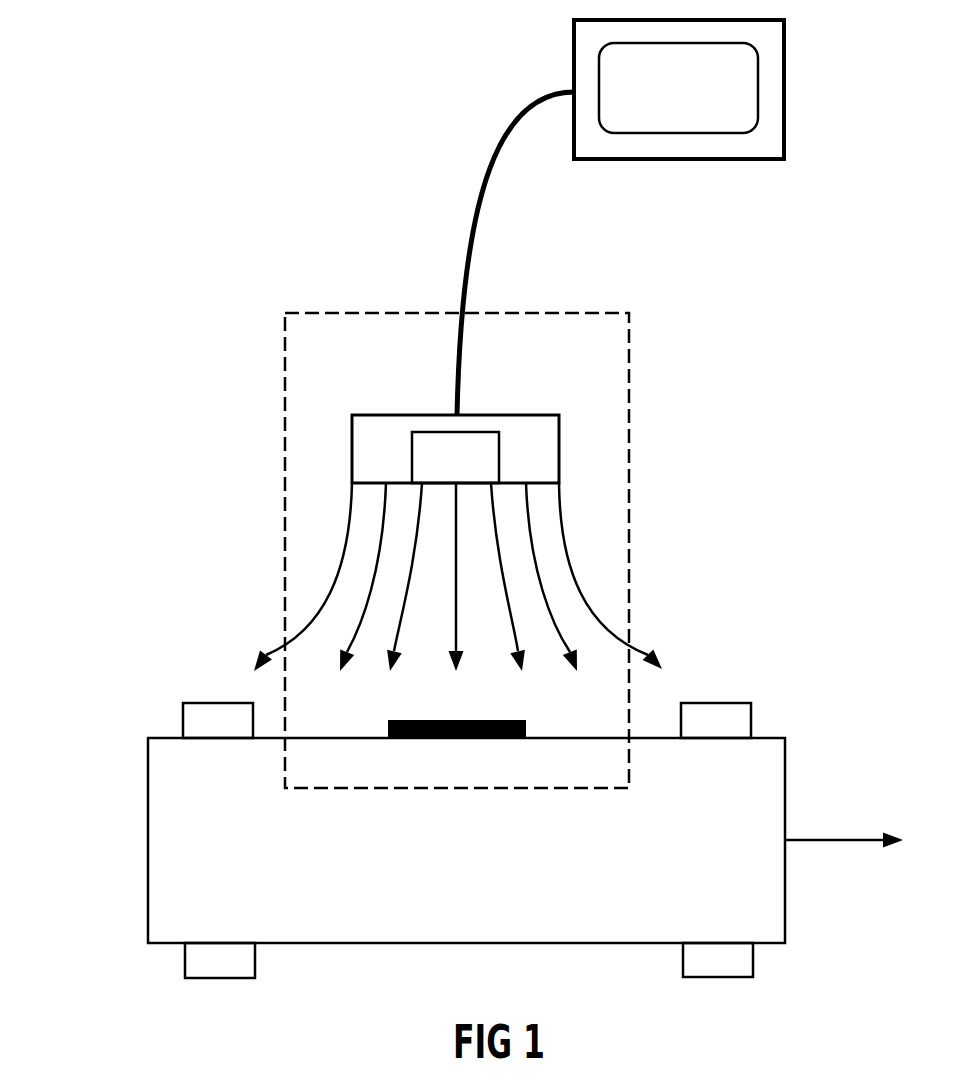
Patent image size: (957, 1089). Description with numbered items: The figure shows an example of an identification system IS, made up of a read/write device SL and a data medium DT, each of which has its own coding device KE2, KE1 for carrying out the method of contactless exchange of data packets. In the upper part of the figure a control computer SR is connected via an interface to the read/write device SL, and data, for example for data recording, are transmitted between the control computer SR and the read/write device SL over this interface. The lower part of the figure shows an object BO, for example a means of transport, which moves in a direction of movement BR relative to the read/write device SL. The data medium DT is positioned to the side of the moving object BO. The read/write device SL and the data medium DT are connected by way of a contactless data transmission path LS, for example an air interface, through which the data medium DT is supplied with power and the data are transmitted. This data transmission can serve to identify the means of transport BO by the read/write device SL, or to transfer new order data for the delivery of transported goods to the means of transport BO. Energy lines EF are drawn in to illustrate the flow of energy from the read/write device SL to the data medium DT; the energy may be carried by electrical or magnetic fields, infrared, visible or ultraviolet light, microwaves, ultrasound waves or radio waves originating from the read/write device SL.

The control computer SR is at (784, 103).
The read/write device SL is at (493, 412).
The coding device KE2 is at (438, 450).
The coding device KE1 is at (387, 733).
The identification system IS is at (628, 478).
The energy lines EF is at (332, 572).
The contactless data transmission path LS is at (497, 618).
The data medium DT is at (528, 733).
The object BO is at (148, 852).
The direction of movement BR is at (805, 838).